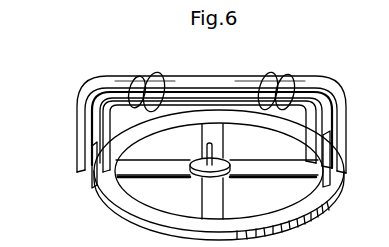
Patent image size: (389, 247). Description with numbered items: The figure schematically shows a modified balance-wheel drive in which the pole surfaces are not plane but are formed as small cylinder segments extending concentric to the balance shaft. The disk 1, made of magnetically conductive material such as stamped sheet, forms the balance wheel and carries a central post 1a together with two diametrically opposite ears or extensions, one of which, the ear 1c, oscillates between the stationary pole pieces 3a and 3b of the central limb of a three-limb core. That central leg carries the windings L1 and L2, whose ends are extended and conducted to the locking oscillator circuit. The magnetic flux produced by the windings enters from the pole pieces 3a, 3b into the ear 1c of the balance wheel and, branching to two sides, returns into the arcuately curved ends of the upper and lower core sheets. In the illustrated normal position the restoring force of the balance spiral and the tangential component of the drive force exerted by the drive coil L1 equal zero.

The disk 1 is at (131, 207).
The central post 1a is at (213, 149).
The ear or extension 1c is at (92, 171).
The pole piece 3a is at (78, 131).
The pole piece 3b is at (104, 140).
The drive coil L1 is at (292, 77).
The winding L2 is at (130, 94).